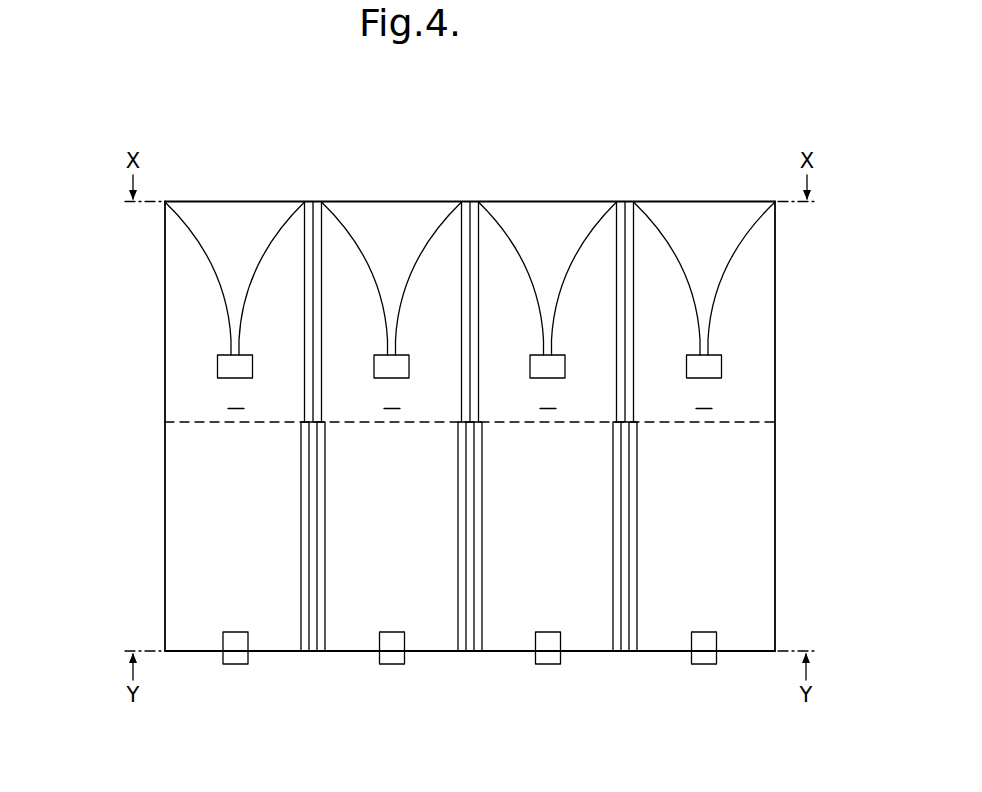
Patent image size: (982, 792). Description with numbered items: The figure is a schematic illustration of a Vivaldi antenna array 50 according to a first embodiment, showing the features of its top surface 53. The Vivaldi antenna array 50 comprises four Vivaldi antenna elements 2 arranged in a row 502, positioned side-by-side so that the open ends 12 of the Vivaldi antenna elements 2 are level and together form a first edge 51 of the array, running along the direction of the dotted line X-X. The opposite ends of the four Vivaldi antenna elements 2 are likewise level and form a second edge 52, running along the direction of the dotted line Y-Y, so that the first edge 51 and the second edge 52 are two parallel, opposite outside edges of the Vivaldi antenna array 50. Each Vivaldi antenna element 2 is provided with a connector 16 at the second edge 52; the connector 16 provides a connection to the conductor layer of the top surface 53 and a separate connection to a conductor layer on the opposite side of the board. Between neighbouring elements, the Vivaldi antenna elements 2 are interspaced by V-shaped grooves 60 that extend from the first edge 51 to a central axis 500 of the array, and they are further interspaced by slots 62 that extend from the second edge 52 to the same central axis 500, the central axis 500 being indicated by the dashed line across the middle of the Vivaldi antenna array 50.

The Vivaldi antenna element 2 is at (470, 398).
The open end 12 is at (275, 201).
The connector 16 is at (235, 655).
The Vivaldi antenna array 50 is at (758, 107).
The first edge 51 is at (199, 201).
The second edge 52 is at (183, 652).
The top surface 53 is at (732, 467).
The V-shaped groove 60 is at (318, 201).
The slot 62 is at (312, 655).
The central axis 500 is at (188, 423).
The row 502 is at (142, 311).